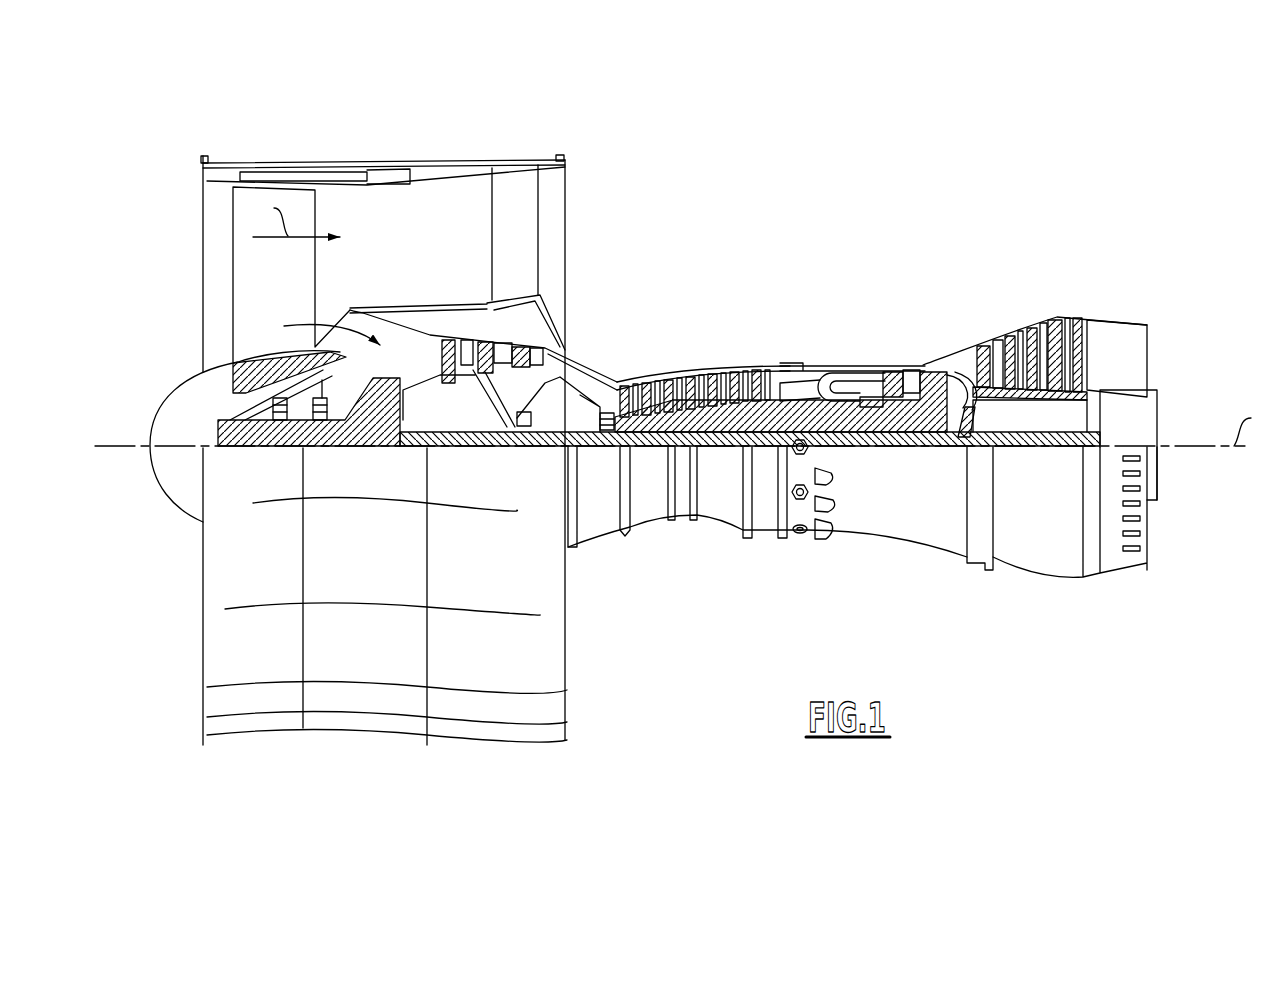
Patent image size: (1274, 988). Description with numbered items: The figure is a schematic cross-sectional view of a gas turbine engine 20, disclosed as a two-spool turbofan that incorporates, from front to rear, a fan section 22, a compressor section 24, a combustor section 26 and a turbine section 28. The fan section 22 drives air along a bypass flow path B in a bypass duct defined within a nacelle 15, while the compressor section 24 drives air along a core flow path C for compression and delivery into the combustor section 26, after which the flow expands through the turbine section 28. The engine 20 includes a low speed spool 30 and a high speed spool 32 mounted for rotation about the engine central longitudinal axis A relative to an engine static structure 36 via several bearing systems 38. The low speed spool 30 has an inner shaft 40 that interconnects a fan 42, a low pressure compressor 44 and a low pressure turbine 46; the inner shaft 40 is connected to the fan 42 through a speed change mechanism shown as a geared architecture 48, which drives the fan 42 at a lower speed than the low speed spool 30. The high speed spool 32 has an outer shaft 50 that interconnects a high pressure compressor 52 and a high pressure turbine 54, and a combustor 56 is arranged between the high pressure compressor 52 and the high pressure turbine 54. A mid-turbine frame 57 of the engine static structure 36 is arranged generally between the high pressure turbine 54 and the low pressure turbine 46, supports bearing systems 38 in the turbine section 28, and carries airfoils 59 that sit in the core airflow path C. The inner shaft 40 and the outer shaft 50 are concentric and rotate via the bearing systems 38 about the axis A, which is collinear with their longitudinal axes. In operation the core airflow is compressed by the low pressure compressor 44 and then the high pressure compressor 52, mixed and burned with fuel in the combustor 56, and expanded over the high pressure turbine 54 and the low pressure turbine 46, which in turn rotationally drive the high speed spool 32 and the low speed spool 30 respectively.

The nacelle 15 is at (385, 165).
The gas turbine engine 20 is at (845, 213).
The fan section 22 is at (316, 157).
The compressor section 24 is at (615, 352).
The combustor section 26 is at (838, 338).
The turbine section 28 is at (987, 303).
The low speed spool 30 is at (722, 458).
The high speed spool 32 is at (770, 400).
The engine static structure 36 is at (763, 543).
The bearing systems 38 is at (523, 430).
The inner shaft 40 is at (580, 446).
The fan 42 is at (287, 291).
The low pressure compressor 44 is at (497, 332).
The low pressure turbine 46 is at (1033, 340).
The geared architecture 48 is at (390, 430).
The outer shaft 50 is at (850, 447).
The high pressure compressor 52 is at (697, 417).
The high pressure turbine 54 is at (906, 363).
The combustor 56 is at (838, 387).
The mid-turbine frame 57 is at (950, 353).
The airfoils 59 is at (960, 388).